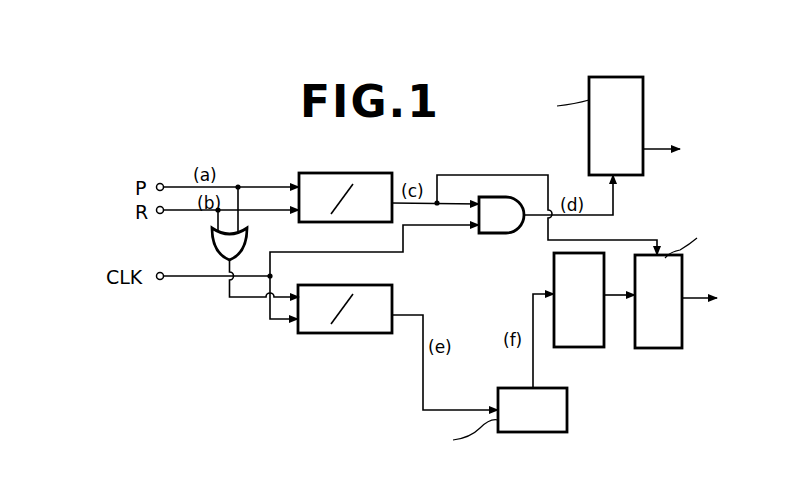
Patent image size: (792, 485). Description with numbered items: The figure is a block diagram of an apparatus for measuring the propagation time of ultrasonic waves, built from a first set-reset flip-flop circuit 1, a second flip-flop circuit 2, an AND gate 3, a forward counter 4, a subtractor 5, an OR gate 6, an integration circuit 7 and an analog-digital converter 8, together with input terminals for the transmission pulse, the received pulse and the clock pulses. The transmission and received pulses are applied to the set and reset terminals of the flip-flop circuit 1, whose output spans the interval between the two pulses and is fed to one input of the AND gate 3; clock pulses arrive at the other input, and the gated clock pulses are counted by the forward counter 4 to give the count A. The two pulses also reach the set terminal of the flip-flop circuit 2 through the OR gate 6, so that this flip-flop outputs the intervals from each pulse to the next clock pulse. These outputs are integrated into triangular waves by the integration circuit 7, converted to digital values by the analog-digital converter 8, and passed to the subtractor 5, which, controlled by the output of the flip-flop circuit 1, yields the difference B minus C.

The flip-flop circuit 1 is at (360, 172).
The flip-flop circuit 2 is at (340, 335).
The AND gate 3 is at (502, 234).
The forward counter 4 is at (643, 97).
The subtractor 5 is at (683, 277).
The OR gate 6 is at (213, 250).
The integration circuit 7 is at (532, 433).
The analog-digital converter 8 is at (580, 348).